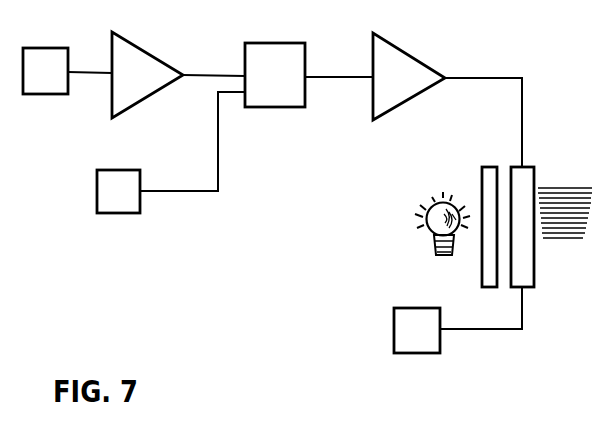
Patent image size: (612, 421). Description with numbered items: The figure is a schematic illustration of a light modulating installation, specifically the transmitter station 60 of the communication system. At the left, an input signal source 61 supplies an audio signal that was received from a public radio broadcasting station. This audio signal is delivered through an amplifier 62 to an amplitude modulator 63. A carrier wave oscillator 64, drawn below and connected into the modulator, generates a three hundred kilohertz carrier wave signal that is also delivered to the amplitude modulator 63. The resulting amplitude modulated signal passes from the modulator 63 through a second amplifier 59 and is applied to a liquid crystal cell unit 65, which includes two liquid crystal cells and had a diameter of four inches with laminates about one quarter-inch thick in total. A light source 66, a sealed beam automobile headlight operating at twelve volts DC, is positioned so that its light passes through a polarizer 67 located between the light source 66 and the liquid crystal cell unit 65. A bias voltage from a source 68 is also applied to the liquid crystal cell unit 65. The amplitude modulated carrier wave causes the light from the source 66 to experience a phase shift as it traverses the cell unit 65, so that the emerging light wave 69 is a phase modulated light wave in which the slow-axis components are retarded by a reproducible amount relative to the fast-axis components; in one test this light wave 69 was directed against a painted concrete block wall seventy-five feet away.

The amplifier 59 is at (399, 55).
The transmitter station 60 is at (471, 62).
The input signal source 61 is at (43, 56).
The amplifier 62 is at (145, 58).
The amplitude modulator 63 is at (277, 52).
The carrier wave oscillator 64 is at (125, 175).
The liquid crystal cell unit 65 is at (528, 170).
The light source 66 is at (436, 202).
The polarizer 67 is at (485, 283).
The bias voltage source 68 is at (415, 310).
The light wave 69 is at (570, 240).